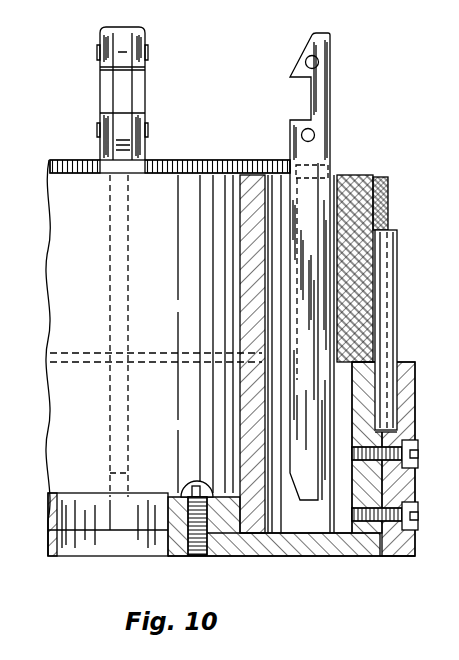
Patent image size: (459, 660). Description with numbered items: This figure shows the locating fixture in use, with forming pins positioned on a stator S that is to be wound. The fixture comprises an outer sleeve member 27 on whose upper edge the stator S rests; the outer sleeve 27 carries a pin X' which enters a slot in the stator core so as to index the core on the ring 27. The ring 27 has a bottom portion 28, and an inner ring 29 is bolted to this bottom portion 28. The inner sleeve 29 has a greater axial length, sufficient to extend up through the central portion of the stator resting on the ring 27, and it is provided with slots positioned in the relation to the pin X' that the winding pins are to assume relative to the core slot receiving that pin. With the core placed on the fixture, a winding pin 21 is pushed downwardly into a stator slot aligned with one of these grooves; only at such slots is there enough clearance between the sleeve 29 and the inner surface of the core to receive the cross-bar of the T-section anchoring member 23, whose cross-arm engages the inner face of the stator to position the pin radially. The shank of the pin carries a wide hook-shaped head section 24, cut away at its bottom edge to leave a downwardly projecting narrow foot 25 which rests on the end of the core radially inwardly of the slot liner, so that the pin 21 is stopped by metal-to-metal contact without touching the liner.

The winding pin 21 is at (298, 307).
The T-section anchoring member 23 is at (280, 212).
The hook-shaped head section 24 is at (147, 88).
The narrow foot 25 is at (103, 164).
The outer sleeve member 27 is at (415, 400).
The bottom portion 28 is at (312, 557).
The inner ring 29 is at (235, 455).
The stator S is at (390, 195).
The pin X' is at (397, 330).